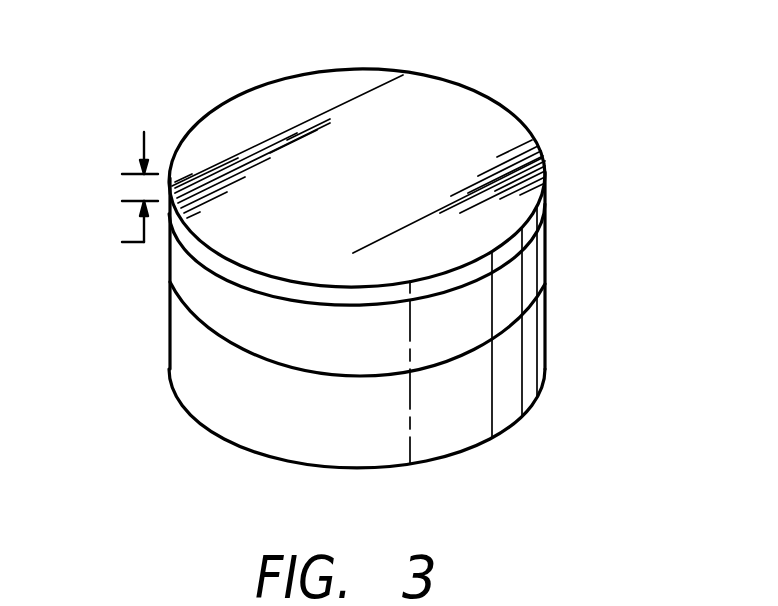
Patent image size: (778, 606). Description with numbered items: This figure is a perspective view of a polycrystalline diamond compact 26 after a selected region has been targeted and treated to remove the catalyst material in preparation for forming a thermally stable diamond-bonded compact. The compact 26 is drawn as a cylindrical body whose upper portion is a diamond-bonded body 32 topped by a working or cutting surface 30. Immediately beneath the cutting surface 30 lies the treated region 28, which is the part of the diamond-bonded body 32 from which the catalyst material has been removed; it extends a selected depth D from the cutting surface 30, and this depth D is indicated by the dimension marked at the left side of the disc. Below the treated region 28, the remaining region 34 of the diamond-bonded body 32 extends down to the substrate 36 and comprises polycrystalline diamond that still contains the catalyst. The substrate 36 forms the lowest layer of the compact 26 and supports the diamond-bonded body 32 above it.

The compact 26 is at (399, 238).
The treated region 28 is at (538, 213).
The working or cutting surface 30 is at (412, 122).
The diamond-bonded body 32 is at (522, 285).
The remaining region 34 is at (193, 280).
The substrate 36 is at (496, 379).
The selected depth D is at (129, 198).